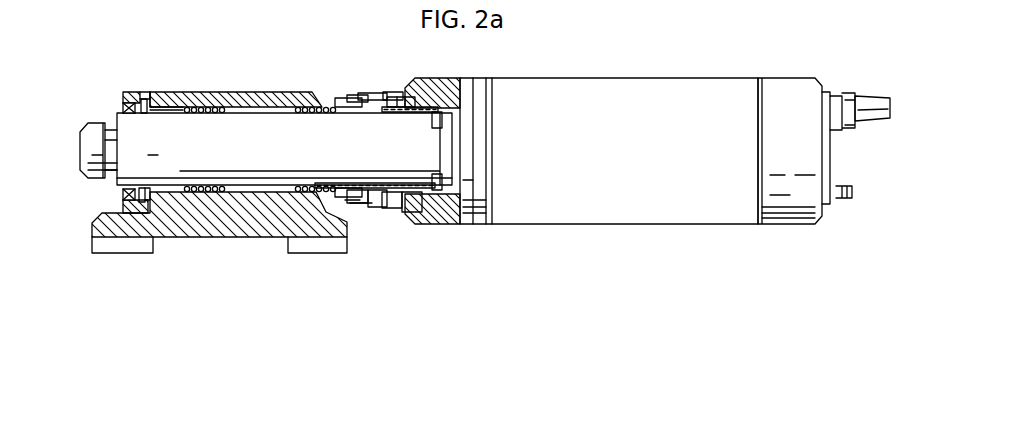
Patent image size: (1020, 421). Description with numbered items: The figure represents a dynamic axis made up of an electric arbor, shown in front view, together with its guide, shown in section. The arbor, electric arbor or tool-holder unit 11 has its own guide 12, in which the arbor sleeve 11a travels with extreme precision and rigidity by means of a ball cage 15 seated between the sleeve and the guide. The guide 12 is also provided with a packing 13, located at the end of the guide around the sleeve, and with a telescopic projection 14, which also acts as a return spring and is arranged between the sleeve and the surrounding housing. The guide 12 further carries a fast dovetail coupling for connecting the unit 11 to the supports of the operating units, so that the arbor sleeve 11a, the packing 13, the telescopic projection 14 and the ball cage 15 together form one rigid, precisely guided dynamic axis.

The electric arbor unit 11 is at (245, 282).
The arbor sleeve 11a is at (246, 130).
The guide 12 is at (242, 222).
The packing 13 is at (123, 194).
The telescopic projection 14 is at (380, 205).
The ball bearings 15 is at (184, 195).